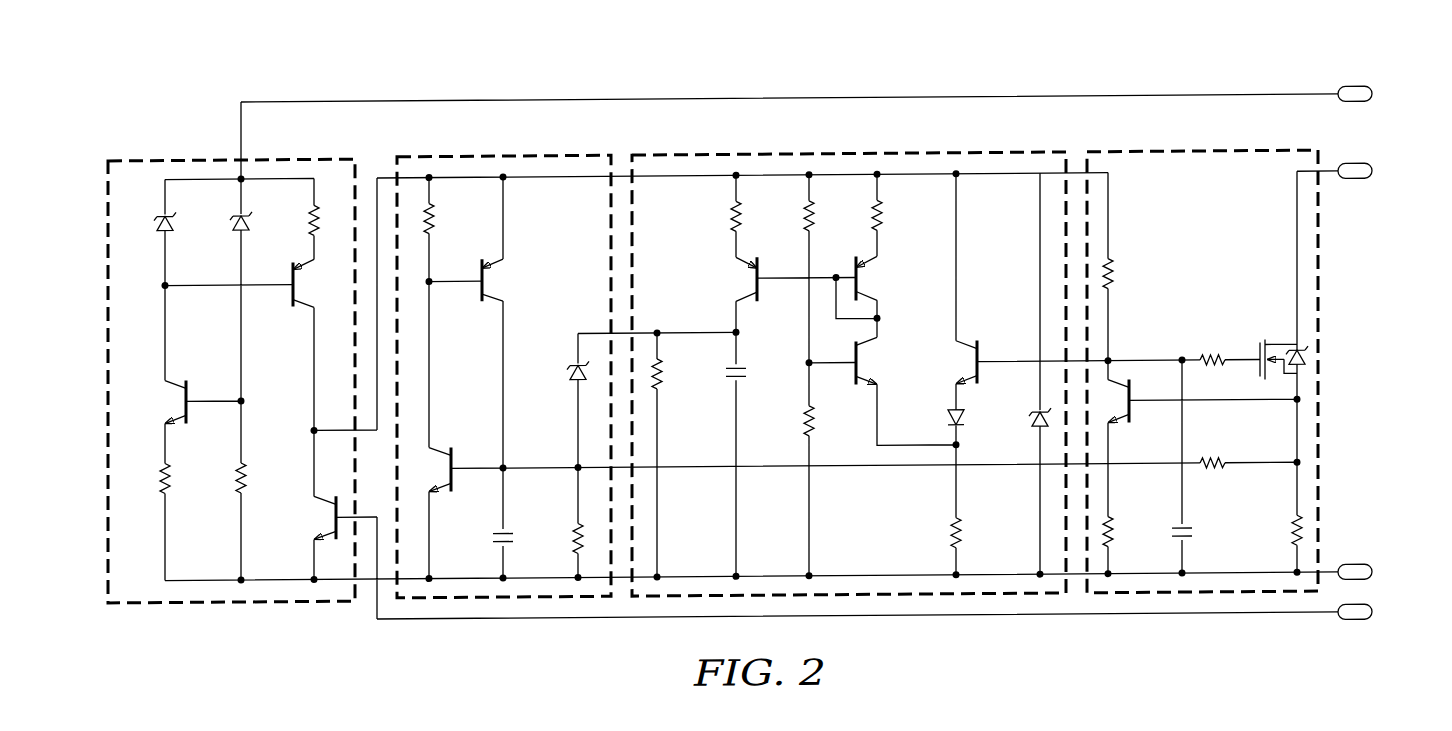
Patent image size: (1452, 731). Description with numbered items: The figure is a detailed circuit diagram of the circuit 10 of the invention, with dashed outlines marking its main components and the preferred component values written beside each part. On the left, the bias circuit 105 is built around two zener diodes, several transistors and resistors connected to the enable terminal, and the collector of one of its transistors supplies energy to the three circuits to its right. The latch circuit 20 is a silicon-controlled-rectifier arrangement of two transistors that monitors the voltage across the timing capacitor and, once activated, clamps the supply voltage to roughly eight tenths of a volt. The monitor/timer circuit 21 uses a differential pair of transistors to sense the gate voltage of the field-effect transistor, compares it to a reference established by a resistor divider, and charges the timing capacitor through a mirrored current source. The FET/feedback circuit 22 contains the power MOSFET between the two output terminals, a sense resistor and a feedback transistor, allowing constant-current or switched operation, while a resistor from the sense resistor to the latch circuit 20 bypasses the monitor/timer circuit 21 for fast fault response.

The circuit 10 is at (1373, 355).
The bias circuit 105 is at (157, 160).
The latch circuit 20 is at (445, 158).
The monitor/timer circuit 21 is at (1000, 156).
The FET/feedback circuit 22 is at (1250, 157).